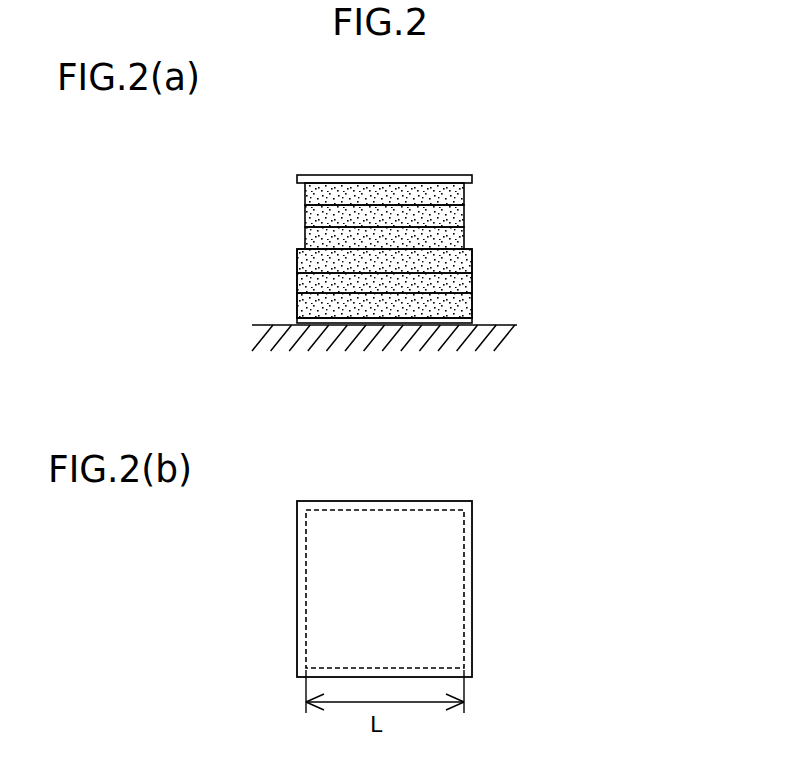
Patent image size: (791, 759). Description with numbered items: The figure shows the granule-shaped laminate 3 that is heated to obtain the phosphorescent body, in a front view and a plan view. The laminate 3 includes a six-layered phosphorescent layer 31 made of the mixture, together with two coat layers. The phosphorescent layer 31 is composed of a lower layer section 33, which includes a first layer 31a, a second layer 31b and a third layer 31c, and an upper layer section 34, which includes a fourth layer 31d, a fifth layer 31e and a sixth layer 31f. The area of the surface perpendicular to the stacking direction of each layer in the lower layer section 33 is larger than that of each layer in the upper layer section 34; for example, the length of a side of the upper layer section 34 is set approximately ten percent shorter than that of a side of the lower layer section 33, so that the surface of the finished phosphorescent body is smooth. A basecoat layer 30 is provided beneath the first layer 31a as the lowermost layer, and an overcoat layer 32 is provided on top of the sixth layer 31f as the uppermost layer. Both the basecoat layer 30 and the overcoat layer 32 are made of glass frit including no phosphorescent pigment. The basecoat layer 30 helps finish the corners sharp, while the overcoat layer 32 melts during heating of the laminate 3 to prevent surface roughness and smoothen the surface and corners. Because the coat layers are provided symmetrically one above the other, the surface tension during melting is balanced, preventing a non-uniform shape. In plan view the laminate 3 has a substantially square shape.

The laminate 3 is at (570, 88).
The basecoat layer 30 is at (472, 320).
The phosphorescent layer 31 is at (621, 145).
The first layer 31a is at (472, 303).
The second layer 31b is at (472, 282).
The third layer 31c is at (472, 258).
The fourth layer 31d is at (464, 233).
The fifth layer 31e is at (464, 212).
The sixth layer 31f is at (464, 188).
The overcoat layer 32 is at (435, 175).
The lower layer section 33 is at (270, 283).
The upper layer section 34 is at (270, 212).